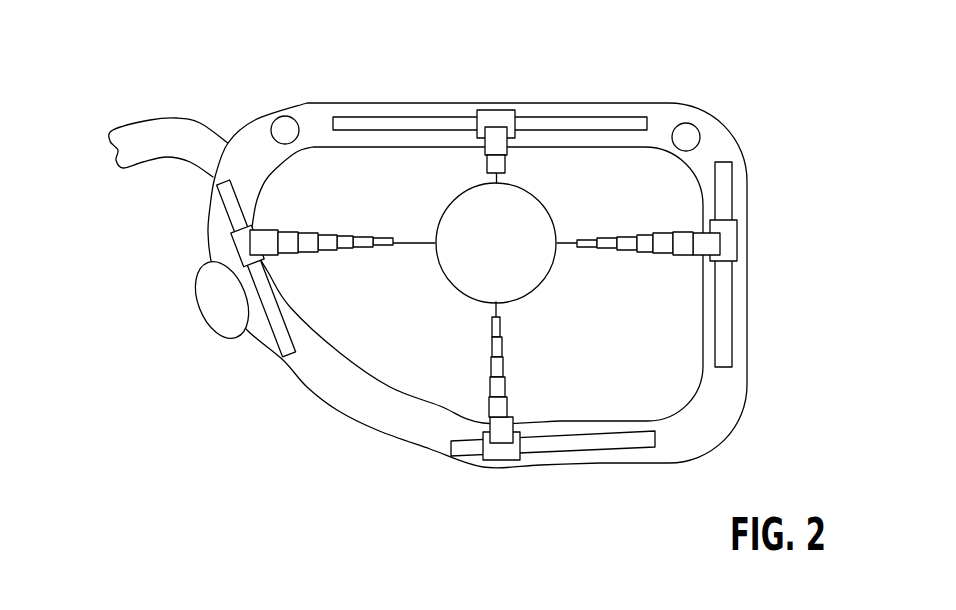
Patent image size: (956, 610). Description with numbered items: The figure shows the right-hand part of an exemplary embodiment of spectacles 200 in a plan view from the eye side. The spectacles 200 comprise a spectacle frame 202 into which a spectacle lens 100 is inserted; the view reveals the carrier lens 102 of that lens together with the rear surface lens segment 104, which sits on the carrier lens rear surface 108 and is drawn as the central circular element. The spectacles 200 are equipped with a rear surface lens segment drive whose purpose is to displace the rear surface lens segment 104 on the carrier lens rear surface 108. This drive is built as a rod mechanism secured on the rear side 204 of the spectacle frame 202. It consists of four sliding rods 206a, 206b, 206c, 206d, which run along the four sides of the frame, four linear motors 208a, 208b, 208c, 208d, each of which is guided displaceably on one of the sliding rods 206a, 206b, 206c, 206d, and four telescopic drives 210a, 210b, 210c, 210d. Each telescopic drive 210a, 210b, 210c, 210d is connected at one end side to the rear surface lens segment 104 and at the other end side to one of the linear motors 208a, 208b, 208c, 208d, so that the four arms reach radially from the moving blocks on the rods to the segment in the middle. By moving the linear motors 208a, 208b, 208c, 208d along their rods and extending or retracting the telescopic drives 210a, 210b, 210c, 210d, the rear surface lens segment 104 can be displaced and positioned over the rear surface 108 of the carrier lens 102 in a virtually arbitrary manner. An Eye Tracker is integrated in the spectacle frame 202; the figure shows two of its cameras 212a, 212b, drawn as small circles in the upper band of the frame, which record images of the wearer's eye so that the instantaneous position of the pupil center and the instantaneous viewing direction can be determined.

The spectacle lens 100 is at (688, 393).
The carrier lens 102 is at (673, 183).
The rear surface lens segment 104 is at (523, 213).
The carrier lens rear surface 108 is at (320, 238).
The spectacles 200 is at (732, 111).
The spectacle frame 202 is at (738, 288).
The rear side of the spectacle frame 204 is at (627, 466).
The sliding rod 206a is at (470, 452).
The sliding rod 206b is at (720, 327).
The sliding rod 206c is at (415, 123).
The sliding rod 206d is at (283, 347).
The linear motor 208a is at (503, 452).
The linear motor 208b is at (730, 242).
The linear motor 208c is at (497, 117).
The linear motor 208d is at (230, 243).
The telescopic drive 210a is at (497, 391).
The telescopic drive 210b is at (668, 237).
The telescopic drive 210c is at (500, 163).
The telescopic drive 210d is at (391, 368).
The camera 212a is at (282, 124).
The camera 212b is at (690, 131).